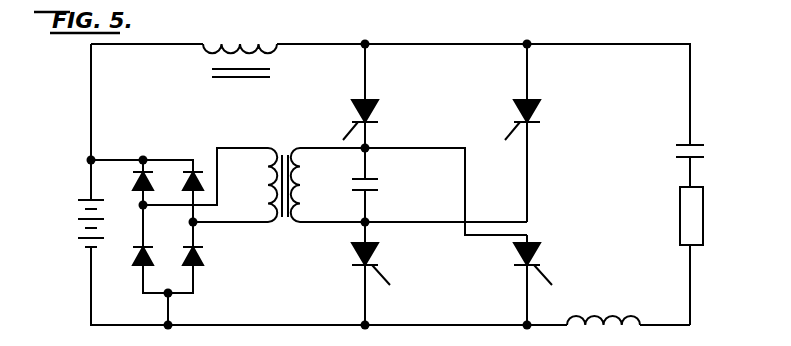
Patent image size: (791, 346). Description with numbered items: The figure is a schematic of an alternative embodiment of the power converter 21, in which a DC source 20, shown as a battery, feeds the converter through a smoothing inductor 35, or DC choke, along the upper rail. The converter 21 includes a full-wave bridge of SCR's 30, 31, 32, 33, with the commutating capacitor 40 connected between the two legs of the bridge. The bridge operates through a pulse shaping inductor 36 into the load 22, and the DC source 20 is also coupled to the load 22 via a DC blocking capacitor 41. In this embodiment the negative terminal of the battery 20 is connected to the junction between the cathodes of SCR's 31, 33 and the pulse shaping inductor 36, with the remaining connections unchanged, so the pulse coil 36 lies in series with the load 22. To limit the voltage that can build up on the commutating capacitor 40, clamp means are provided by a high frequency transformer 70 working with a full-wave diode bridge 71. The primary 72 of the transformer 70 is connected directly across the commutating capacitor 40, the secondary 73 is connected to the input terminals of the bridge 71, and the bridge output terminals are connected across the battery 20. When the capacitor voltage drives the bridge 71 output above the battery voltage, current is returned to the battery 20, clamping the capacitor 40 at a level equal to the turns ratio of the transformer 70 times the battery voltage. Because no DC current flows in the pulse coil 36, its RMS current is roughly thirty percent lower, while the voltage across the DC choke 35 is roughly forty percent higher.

The DC source 20 is at (56, 223).
The power converter 21 is at (464, 42).
The load 22 is at (705, 198).
The SCR 30 is at (377, 104).
The SCR 31 is at (382, 256).
The SCR 32 is at (538, 104).
The SCR 33 is at (540, 246).
The smoothing inductor 35 is at (263, 30).
The pulse shaping inductor 36 is at (617, 298).
The commutating capacitor 40 is at (381, 184).
The DC blocking capacitor 41 is at (704, 150).
The high frequency transformer 70 is at (285, 153).
The full-wave diode bridge 71 is at (147, 242).
The primary 72 is at (306, 228).
The secondary 73 is at (263, 228).